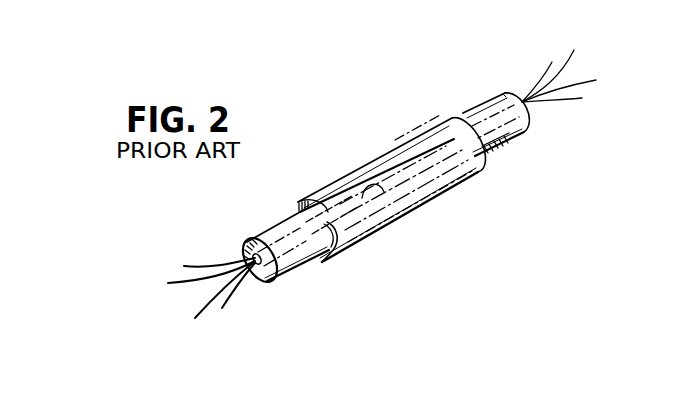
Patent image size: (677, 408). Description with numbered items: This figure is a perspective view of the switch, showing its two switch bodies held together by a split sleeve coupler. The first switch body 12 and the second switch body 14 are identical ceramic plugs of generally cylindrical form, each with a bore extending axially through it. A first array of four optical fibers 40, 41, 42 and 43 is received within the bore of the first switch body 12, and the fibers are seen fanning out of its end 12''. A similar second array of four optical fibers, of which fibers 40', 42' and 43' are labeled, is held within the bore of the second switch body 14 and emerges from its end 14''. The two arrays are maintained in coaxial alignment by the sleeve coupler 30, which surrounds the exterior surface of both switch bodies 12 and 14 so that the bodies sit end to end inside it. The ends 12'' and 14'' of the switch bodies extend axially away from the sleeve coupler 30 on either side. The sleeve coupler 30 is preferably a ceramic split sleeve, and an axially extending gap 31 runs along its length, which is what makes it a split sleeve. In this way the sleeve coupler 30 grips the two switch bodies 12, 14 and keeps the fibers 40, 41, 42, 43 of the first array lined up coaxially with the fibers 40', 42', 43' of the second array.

The first switch body 12 is at (292, 235).
The end of first switch body 12'' is at (296, 288).
The second switch body 14 is at (510, 143).
The end of second switch body 14'' is at (462, 85).
The sleeve coupler 30 is at (378, 156).
The axially extending gap 31 is at (384, 192).
The optical fiber 40 is at (199, 239).
The optical fiber 41 is at (172, 283).
The optical fiber 42 is at (185, 295).
The optical fiber 43 is at (246, 301).
The optical fiber 40' is at (526, 53).
The optical fiber 42' is at (583, 71).
The optical fiber 43' is at (579, 120).